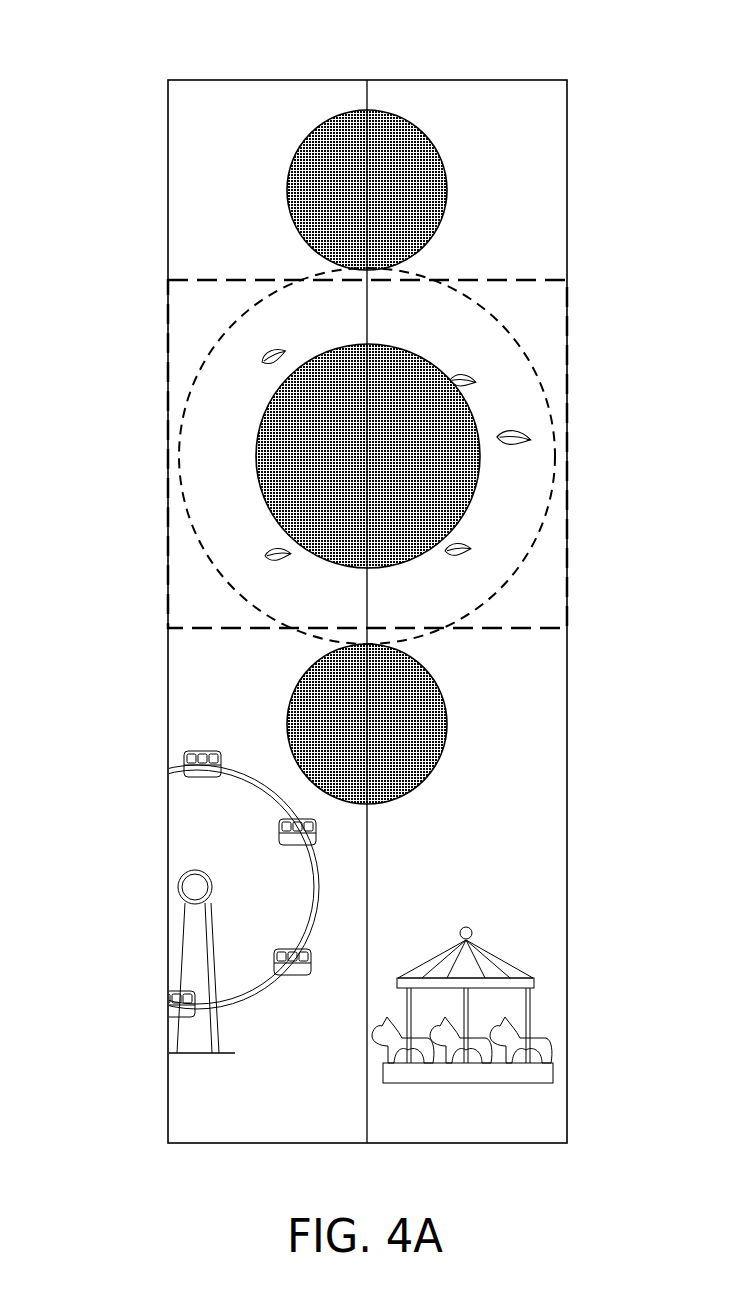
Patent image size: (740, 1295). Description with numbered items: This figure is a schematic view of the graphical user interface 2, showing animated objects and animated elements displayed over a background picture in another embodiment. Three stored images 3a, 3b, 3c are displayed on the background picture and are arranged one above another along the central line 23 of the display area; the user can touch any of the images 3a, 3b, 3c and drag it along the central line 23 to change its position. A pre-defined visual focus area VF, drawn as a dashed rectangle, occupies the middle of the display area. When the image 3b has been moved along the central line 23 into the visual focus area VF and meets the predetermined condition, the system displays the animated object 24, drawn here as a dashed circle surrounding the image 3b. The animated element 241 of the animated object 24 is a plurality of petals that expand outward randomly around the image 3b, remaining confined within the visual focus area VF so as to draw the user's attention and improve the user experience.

The graphical user interface 2 is at (66, 31).
The central line 23 is at (367, 95).
The image 3a is at (295, 157).
The image 3b is at (283, 385).
The image 3c is at (295, 685).
The animated object 24 is at (203, 550).
The animated element 241 is at (512, 432).
The visual focus area VF is at (508, 628).